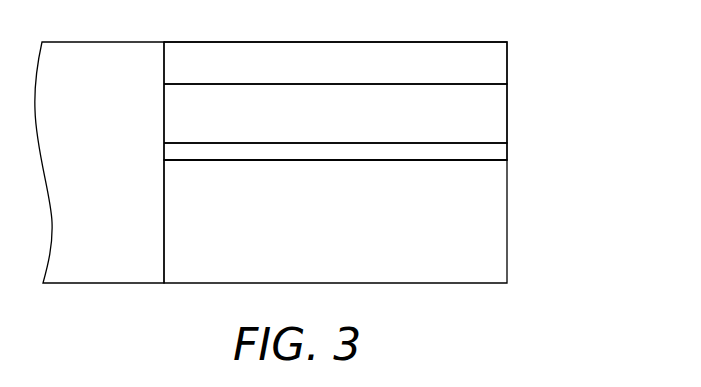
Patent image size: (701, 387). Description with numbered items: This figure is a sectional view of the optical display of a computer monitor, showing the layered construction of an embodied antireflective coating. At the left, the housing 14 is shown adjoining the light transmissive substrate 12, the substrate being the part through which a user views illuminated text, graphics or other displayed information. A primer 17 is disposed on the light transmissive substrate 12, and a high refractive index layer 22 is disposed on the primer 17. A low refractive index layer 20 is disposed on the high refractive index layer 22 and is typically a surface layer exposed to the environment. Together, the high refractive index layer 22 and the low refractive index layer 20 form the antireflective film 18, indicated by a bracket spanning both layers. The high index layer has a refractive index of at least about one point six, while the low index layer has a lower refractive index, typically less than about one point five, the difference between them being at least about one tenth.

The light transmissive substrate 12 is at (497, 232).
The housing 14 is at (115, 52).
The primer 17 is at (497, 152).
The antireflective film 18 is at (577, 42).
The low refractive index layer 20 is at (497, 67).
The high refractive index layer 22 is at (497, 112).